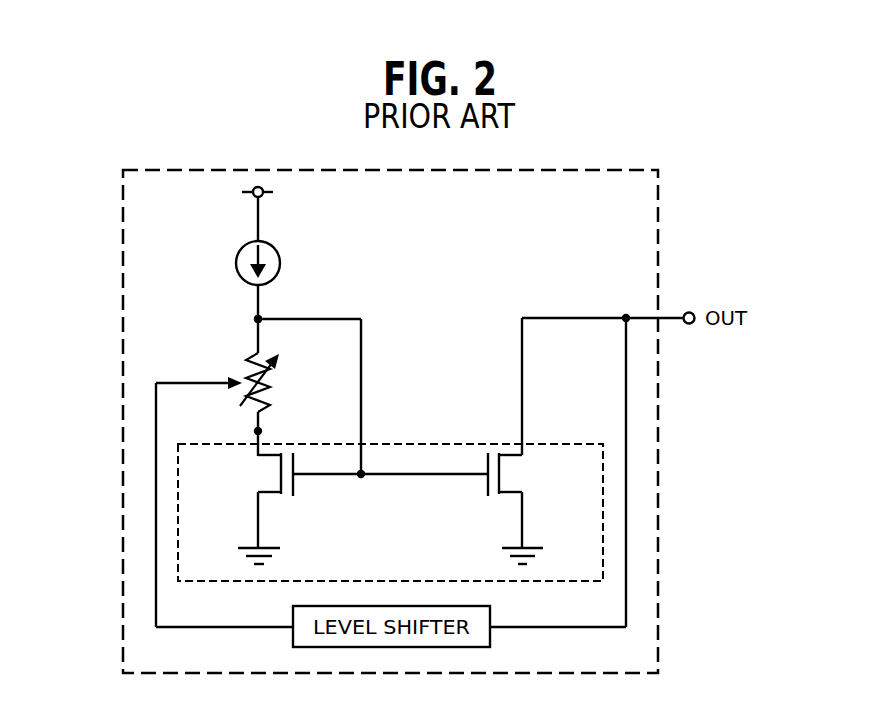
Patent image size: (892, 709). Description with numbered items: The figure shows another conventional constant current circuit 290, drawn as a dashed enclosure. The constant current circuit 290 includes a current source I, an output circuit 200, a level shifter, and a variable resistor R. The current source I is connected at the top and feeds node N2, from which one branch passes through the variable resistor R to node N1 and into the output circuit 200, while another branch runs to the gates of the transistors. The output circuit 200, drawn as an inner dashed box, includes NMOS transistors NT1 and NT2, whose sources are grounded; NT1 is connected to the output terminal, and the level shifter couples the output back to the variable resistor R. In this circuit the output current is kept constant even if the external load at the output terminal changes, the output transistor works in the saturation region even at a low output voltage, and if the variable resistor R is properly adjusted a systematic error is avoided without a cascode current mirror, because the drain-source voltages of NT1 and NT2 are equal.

The constant current circuit 290 is at (666, 221).
The output circuit 200 is at (557, 438).
The current source I is at (267, 263).
The variable resistor R is at (269, 382).
The node N1 is at (274, 431).
The node N2 is at (242, 319).
The NMOS transistor NT1 is at (501, 473).
The NMOS transistor NT2 is at (280, 473).